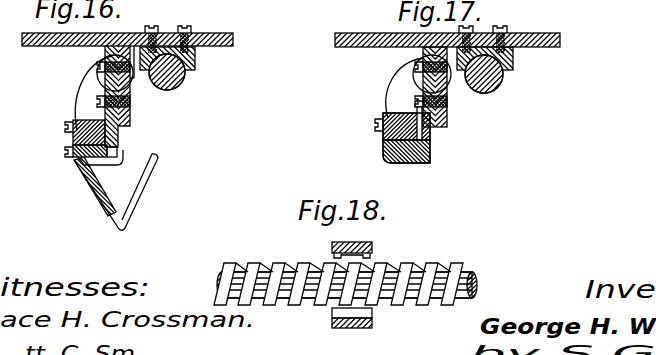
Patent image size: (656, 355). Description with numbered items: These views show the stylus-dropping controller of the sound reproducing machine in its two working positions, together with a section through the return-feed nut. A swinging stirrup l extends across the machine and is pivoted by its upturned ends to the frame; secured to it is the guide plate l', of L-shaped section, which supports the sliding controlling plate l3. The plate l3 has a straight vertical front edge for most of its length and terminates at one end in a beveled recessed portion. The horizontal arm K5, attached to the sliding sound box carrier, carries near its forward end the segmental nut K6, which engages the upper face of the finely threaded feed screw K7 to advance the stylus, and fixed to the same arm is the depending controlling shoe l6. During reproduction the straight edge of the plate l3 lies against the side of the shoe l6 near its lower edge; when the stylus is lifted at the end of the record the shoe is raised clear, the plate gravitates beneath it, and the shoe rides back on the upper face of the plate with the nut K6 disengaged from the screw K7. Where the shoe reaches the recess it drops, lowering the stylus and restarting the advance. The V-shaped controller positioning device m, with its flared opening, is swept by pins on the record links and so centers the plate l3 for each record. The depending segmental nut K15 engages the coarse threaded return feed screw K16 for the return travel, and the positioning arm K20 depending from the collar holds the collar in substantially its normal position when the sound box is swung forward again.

In FIG. 16, the forwardly projecting horizontal arm K5 is at (222, 33).
In FIG. 17, the forwardly projecting horizontal arm K5 is at (550, 33).
In FIG. 16, the segmental nut K6 is at (196, 62).
In FIG. 17, the segmental nut K6 is at (514, 65).
In FIG. 16, the finely threaded feed screw K7 is at (182, 88).
In FIG. 17, the finely threaded feed screw K7 is at (500, 90).
In FIG. 16, the swinging stirrup l is at (74, 103).
In FIG. 17, the swinging stirrup l is at (396, 105).
In FIG. 16, the guide plate l' is at (112, 148).
In FIG. 17, the guide plate l' is at (382, 144).
In FIG. 17, the sliding controlling plate l3 is at (424, 164).
In FIG. 16, the depending controlling shoe l6 is at (119, 143).
In FIG. 17, the depending controlling shoe l6 is at (431, 140).
In FIG. 16, the V-shaped controller positioning device m is at (146, 192).
In FIG. 18, the depending segmental nut K15 is at (373, 245).
In FIG. 18, the coarse threaded return feed screw K16 is at (468, 270).
In FIG. 18, the positioning arm K20 is at (371, 328).